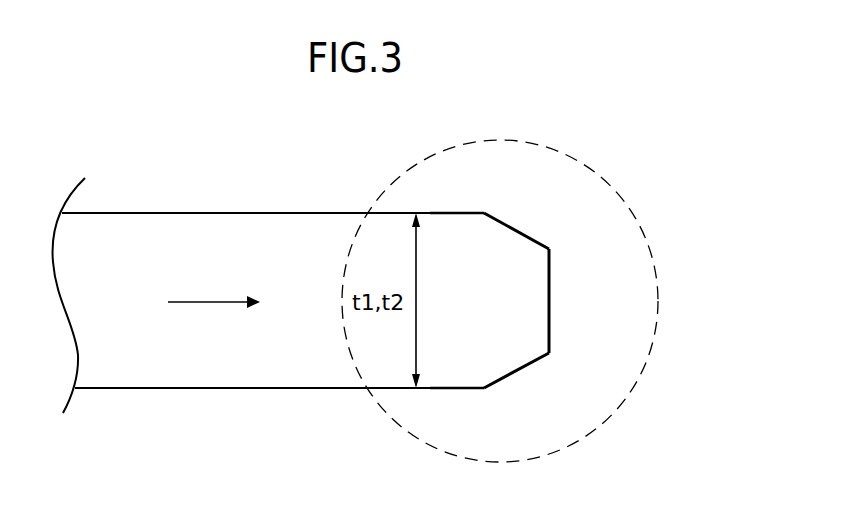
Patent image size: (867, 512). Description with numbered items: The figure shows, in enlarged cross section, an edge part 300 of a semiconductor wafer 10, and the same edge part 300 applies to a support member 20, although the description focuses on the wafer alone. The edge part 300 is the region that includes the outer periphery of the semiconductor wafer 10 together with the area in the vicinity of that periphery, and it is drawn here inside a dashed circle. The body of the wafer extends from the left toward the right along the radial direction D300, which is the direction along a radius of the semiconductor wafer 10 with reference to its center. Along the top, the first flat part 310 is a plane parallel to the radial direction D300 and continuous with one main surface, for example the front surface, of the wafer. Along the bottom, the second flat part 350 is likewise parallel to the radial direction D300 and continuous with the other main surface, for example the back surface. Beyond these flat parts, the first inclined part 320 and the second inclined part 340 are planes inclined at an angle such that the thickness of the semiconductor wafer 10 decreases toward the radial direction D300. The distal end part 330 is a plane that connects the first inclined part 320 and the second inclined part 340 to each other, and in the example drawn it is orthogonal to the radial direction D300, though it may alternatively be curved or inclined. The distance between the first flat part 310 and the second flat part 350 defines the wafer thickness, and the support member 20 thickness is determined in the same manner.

The semiconductor wafer 10 is at (399, 302).
The support member 20 is at (399, 302).
The edge part 300 is at (632, 212).
The first flat part 310 is at (443, 213).
The first inclined part 320 is at (518, 231).
The distal end part 330 is at (549, 290).
The second inclined part 340 is at (522, 368).
The second flat part 350 is at (452, 388).
The radial direction D300 is at (214, 286).